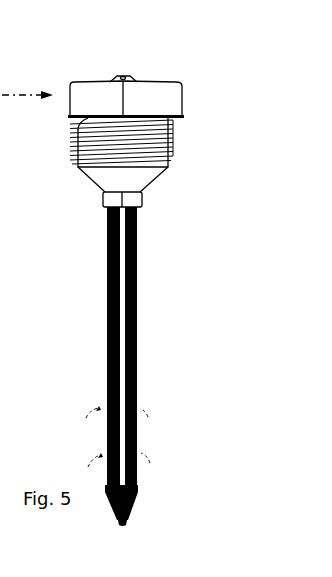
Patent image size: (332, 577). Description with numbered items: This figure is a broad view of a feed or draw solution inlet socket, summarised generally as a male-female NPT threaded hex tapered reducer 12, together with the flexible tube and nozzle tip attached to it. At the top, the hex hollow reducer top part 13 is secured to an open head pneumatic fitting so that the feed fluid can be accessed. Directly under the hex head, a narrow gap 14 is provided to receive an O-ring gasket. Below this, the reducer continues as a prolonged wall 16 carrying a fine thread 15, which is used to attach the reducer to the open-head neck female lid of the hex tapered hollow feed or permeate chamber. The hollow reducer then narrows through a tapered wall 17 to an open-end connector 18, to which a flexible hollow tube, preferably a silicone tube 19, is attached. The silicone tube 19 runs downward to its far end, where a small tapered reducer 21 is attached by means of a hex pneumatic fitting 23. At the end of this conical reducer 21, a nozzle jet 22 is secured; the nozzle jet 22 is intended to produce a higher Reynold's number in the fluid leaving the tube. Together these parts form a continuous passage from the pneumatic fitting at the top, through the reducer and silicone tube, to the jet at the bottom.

The male-female NPT threaded hex tapered reducer 12 is at (146, 52).
The hex hollow reducer top part 13 is at (170, 95).
The narrow gap 14 is at (78, 137).
The fine thread 15 is at (173, 133).
The wall 16 is at (168, 160).
The tapered wall 17 is at (90, 180).
The open-end connector 18 is at (142, 200).
The silicone tube 19 is at (137, 315).
The small tapered reducer 21 is at (134, 506).
The nozzle jet 22 is at (127, 523).
The hex pneumatic fitting 23 is at (138, 490).